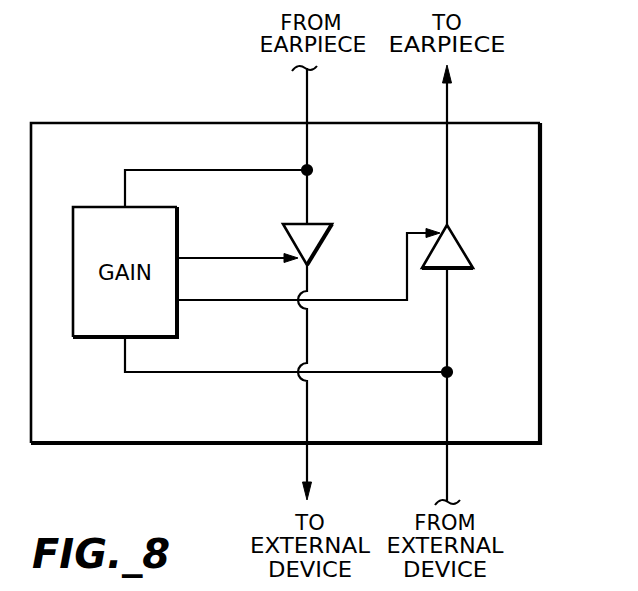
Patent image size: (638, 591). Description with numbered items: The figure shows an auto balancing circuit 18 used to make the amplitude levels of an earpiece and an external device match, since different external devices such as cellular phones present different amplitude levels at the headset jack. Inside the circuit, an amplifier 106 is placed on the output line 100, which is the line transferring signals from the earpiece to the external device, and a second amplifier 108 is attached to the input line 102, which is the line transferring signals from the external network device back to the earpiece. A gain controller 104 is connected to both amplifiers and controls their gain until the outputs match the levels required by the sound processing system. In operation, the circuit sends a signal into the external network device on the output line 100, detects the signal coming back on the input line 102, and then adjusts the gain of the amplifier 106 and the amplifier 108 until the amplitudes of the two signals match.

The auto balancing circuit 18 is at (541, 198).
The output line 100 is at (307, 102).
The input line 102 is at (448, 112).
The gain controller 104 is at (178, 244).
The amplifier 106 is at (324, 244).
The amplifier 108 is at (462, 244).